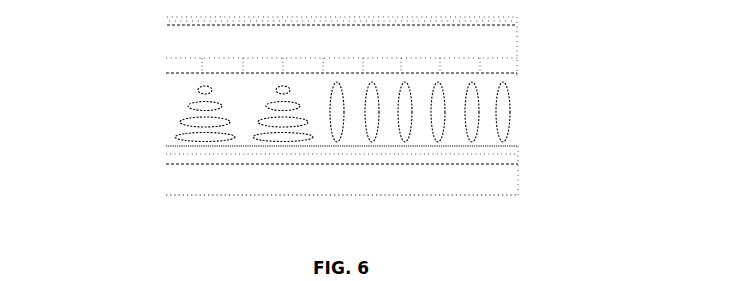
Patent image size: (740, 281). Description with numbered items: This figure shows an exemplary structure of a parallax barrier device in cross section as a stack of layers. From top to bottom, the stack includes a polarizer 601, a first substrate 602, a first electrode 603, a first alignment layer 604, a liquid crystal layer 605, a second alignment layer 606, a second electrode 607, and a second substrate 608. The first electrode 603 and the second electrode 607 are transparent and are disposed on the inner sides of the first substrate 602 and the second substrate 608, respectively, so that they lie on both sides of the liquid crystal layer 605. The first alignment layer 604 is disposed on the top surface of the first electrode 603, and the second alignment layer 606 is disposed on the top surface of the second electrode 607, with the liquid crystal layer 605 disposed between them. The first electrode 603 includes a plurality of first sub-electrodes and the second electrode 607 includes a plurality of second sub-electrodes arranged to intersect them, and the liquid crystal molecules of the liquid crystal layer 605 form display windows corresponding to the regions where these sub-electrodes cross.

The polarizer 601 is at (520, 18).
The first substrate 602 is at (116, 37).
The first electrode 603 is at (164, 63).
The first alignment layer 604 is at (527, 75).
The liquid crystal layer 605 is at (512, 112).
The second alignment layer 606 is at (520, 150).
The second electrode 607 is at (164, 161).
The second substrate 608 is at (520, 186).